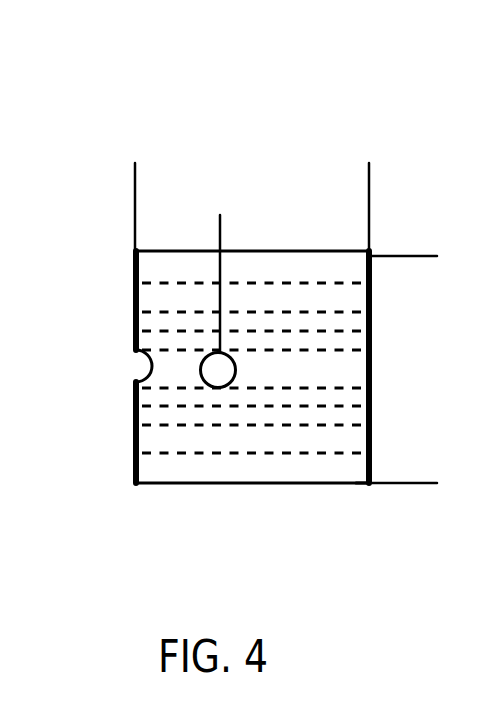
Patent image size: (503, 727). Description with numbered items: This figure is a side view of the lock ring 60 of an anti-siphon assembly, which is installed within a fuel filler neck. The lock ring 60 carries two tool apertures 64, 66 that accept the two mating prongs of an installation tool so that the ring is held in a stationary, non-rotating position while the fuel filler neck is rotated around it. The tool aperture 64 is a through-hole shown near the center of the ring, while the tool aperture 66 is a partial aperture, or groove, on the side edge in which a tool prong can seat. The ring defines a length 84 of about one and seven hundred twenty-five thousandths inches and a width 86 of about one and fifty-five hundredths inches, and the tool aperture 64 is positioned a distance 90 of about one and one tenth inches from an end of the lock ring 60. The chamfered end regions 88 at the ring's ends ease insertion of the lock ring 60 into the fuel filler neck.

The lock ring 60 is at (308, 472).
The tool aperture 64 is at (218, 388).
The tool aperture 66 is at (140, 382).
The length 84 is at (135, 170).
The width 86 is at (434, 256).
The chamfered end regions 88 is at (374, 488).
The distance 90 is at (220, 222).